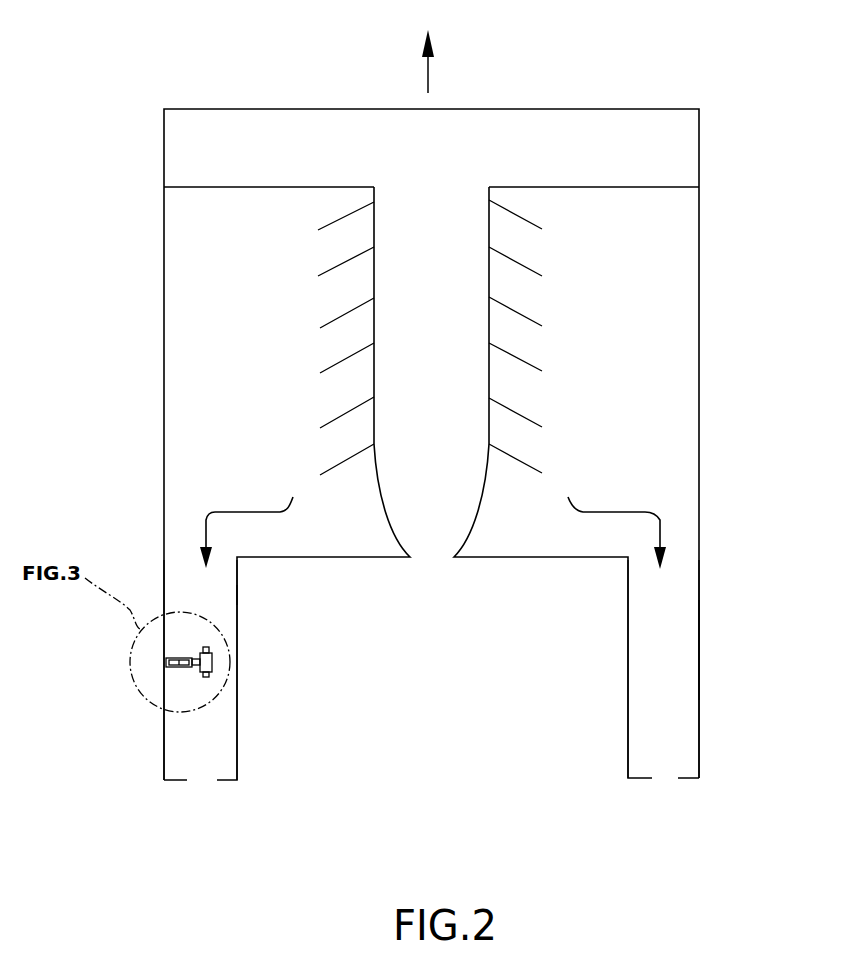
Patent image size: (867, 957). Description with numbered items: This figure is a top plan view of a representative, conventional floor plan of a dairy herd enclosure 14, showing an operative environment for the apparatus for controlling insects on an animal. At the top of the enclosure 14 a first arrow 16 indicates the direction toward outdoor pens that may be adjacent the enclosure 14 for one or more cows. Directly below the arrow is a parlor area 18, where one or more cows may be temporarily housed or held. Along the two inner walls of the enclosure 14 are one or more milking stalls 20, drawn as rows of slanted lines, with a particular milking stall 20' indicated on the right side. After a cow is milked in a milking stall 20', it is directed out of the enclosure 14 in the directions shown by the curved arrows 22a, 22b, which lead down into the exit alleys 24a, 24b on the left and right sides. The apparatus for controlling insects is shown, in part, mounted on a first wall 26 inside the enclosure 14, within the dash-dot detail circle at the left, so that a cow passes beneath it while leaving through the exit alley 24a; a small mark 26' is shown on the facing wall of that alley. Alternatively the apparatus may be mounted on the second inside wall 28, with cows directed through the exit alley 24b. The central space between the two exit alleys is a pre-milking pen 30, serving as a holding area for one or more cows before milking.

The dairy herd enclosure 14 is at (112, 114).
The first arrow 16 is at (428, 77).
The parlor area 18 is at (677, 137).
The milking stalls 20 is at (474, 337).
The milking stall 20' is at (565, 408).
The curved arrow 22a is at (660, 514).
The curved arrow 22b is at (206, 518).
The exit alley 24a is at (188, 735).
The exit alley 24b is at (680, 703).
The first wall 26 is at (159, 616).
The sensor port 26' is at (267, 590).
The second inside wall 28 is at (700, 662).
The pre-milking pen 30 is at (428, 636).